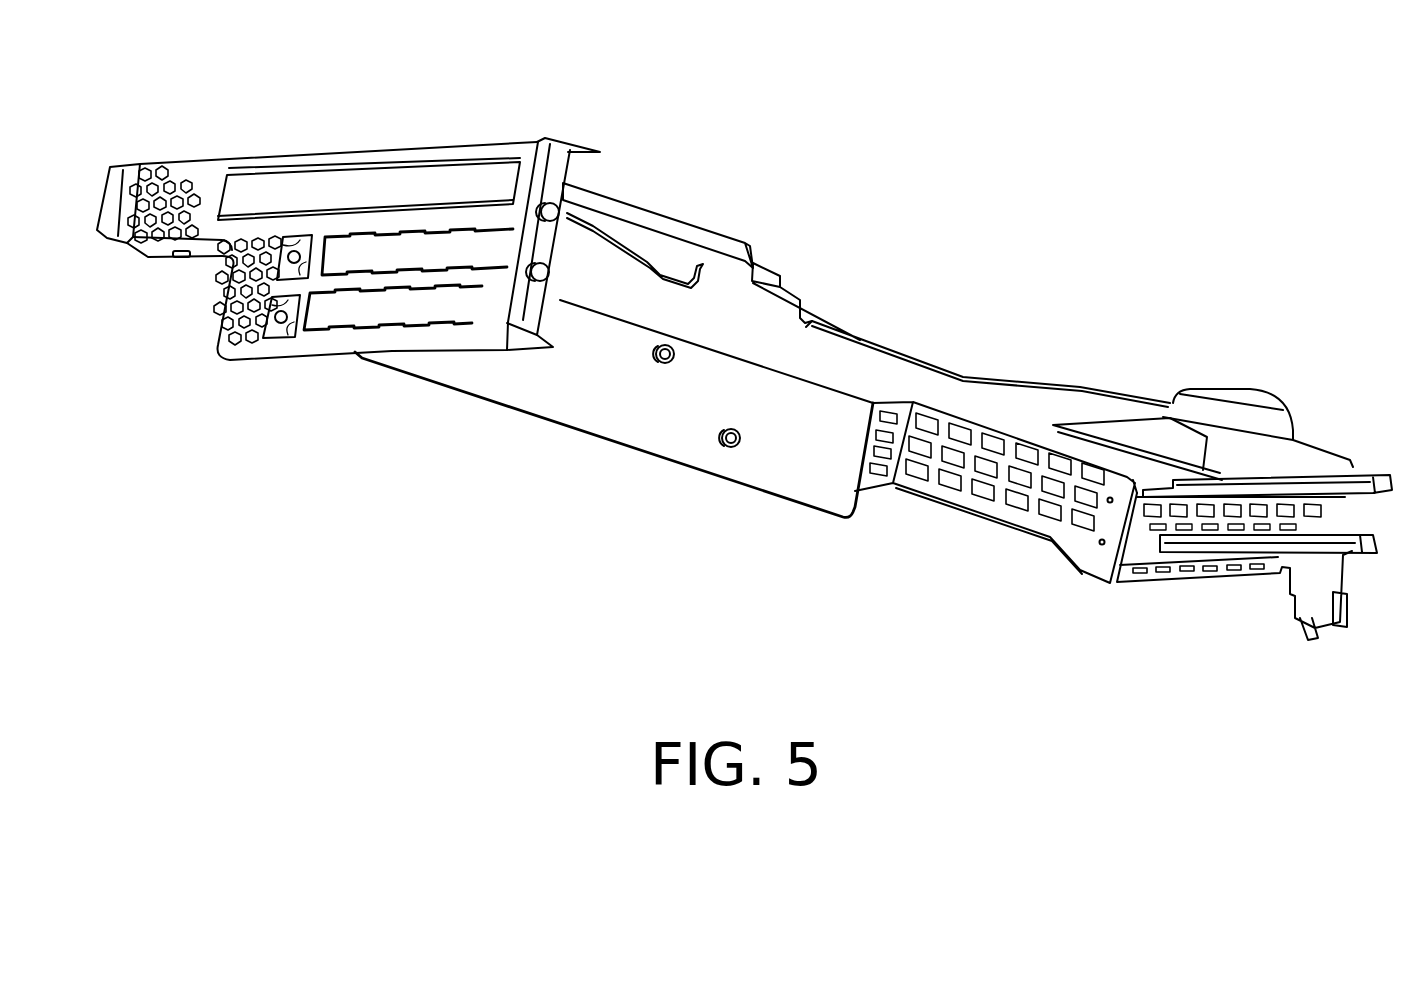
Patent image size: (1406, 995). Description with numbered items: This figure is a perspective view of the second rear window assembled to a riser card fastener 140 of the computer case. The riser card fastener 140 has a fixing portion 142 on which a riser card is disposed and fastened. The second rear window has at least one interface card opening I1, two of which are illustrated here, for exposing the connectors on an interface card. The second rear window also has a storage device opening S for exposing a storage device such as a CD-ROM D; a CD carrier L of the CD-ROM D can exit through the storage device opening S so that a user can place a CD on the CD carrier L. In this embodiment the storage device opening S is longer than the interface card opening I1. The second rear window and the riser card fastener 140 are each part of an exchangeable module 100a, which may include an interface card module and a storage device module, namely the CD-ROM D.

The exchangeable module 100a is at (744, 392).
The riser card fastener 140 is at (840, 355).
The fixing portion 142 is at (777, 467).
The CD-ROM D is at (645, 218).
The CD carrier L is at (385, 185).
The storage device opening S is at (272, 217).
The interface card opening I1 is at (378, 328).